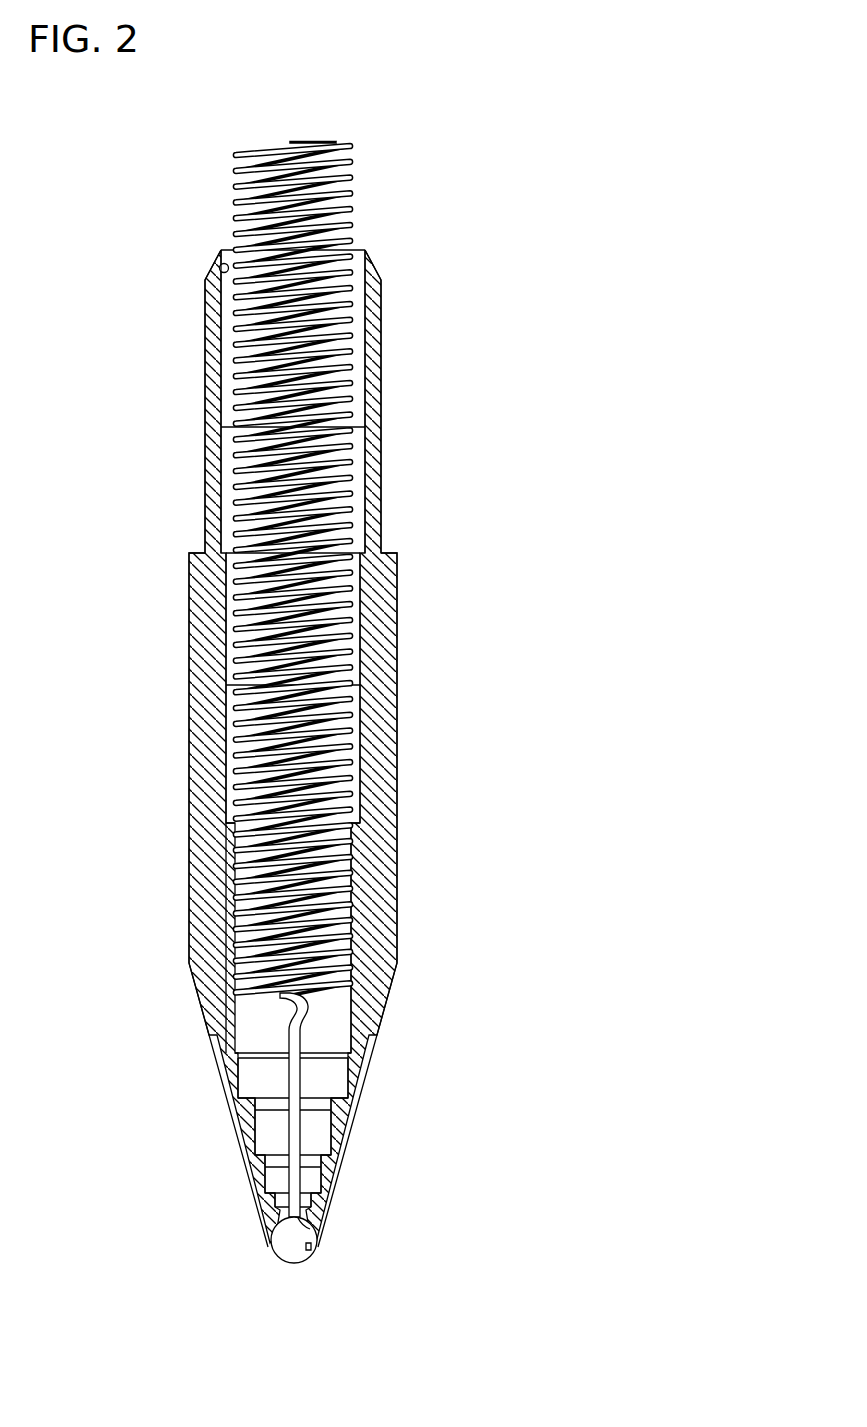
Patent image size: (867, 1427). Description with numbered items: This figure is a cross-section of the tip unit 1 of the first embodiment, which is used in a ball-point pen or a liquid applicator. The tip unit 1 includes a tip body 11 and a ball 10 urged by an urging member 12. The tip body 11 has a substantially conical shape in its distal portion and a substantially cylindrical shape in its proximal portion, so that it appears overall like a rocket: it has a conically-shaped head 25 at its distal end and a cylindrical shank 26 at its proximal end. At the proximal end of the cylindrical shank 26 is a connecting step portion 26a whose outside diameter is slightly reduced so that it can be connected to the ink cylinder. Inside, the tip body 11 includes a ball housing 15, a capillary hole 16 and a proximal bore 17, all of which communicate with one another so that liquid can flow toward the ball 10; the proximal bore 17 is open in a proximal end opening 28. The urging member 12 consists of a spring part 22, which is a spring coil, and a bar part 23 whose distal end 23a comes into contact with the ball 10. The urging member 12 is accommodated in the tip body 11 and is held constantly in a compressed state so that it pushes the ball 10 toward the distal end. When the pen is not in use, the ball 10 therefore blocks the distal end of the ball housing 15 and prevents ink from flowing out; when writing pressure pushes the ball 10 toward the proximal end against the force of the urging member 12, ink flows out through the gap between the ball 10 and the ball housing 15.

The tip unit 1 is at (464, 215).
The ball 10 is at (293, 1265).
The tip body 11 is at (390, 608).
The urging member 12 is at (311, 118).
The ball housing 15 is at (313, 1253).
The capillary hole 16 is at (283, 1210).
The proximal bore 17 is at (222, 268).
The spring part 22 is at (337, 746).
The bar part 23 is at (347, 358).
The distal end 23a is at (313, 1230).
The conically-shaped head 25 is at (370, 1063).
The cylindrical shank 26 is at (397, 903).
The connecting step portion 26a is at (380, 457).
The proximal end opening 28 is at (362, 257).